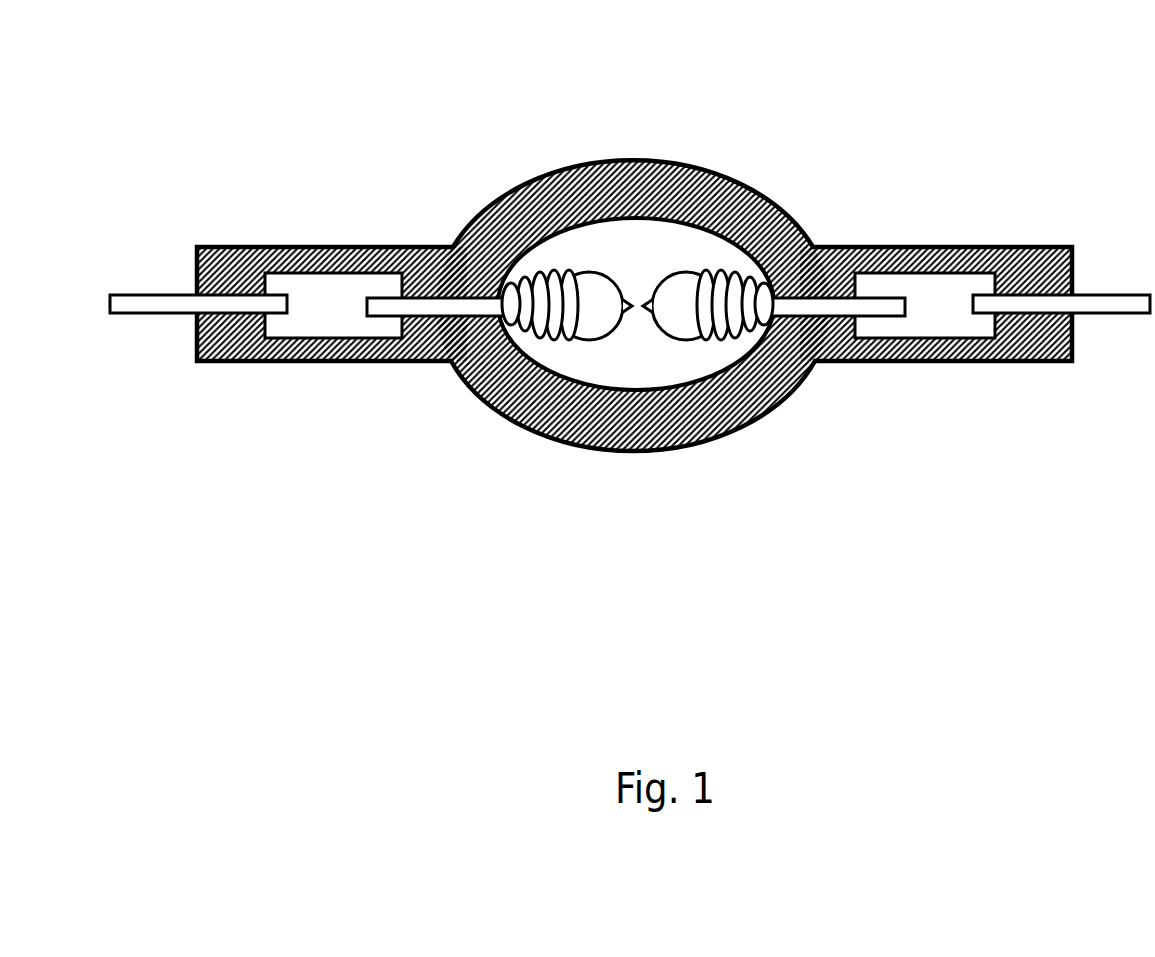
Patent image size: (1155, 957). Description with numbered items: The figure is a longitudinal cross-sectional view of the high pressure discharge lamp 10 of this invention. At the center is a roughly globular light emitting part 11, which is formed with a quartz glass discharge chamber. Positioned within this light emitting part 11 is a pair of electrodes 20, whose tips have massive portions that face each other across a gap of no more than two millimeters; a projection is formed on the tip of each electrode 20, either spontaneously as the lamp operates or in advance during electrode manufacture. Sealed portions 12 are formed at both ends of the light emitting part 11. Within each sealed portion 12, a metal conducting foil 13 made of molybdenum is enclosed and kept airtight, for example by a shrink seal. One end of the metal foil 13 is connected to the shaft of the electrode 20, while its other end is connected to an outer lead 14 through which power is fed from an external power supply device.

The high pressure discharge lamp 10 is at (634, 304).
The light emitting part 11 is at (647, 465).
The sealed portion 12 is at (327, 378).
The metal conducting foil 13 is at (314, 290).
The lead wire 14 is at (142, 287).
The electrode 20 is at (713, 258).